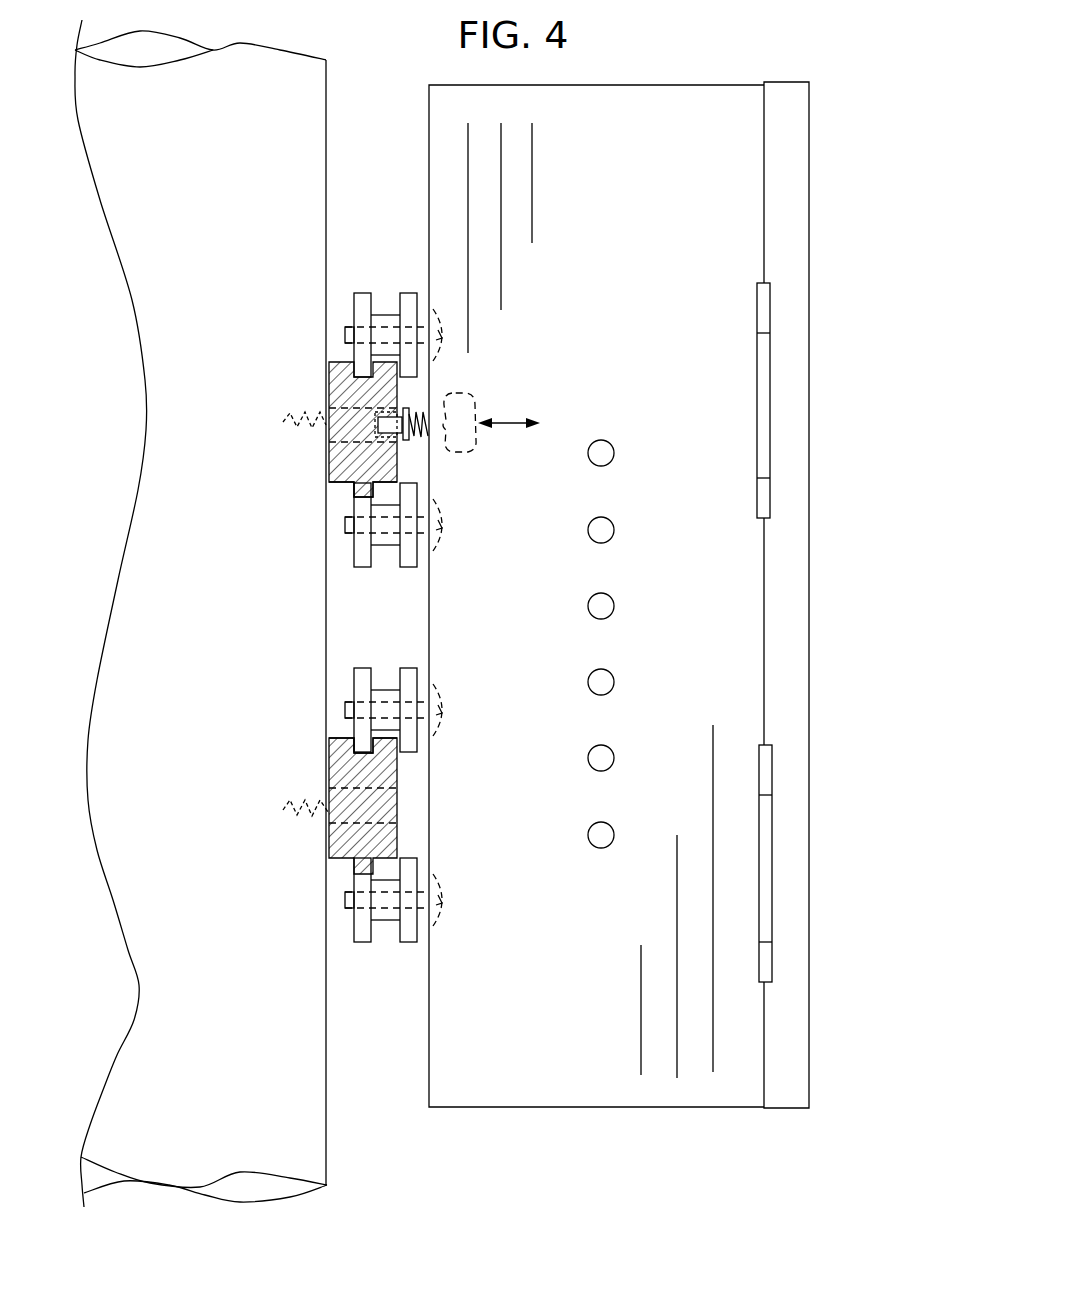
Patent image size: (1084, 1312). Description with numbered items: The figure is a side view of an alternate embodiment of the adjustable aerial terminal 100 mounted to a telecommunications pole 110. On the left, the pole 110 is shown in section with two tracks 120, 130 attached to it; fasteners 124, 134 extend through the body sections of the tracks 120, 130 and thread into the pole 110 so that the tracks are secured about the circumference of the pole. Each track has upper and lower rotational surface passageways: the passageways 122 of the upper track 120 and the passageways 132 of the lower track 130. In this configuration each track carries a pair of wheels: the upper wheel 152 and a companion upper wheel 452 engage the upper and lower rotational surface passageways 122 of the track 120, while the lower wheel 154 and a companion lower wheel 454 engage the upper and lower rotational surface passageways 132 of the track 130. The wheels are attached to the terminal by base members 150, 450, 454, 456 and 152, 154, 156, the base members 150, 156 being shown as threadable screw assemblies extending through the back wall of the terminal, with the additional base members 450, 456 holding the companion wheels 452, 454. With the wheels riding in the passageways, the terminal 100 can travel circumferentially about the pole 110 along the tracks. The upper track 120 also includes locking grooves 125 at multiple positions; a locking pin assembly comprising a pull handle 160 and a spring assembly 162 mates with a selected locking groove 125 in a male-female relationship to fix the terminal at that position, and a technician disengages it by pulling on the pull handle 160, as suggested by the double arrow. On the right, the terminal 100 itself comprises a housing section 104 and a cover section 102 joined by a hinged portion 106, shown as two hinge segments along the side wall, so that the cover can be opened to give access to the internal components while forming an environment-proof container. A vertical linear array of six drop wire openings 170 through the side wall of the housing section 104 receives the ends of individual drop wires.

The adjustable aerial terminal 100 is at (687, 607).
The cover section 102 is at (795, 1032).
The housing section 104 is at (497, 1087).
The hinged portion 106 is at (762, 373).
The telecommunications pole 110 is at (330, 1198).
The track 120 is at (340, 458).
The rotational surface passageway 122 is at (348, 487).
The fastener 124 is at (298, 415).
The locking groove 125 is at (380, 440).
The track 130 is at (340, 778).
The rotational surface passageway 132 is at (336, 767).
The fastener 134 is at (290, 815).
The base member 150 is at (447, 330).
The upper wheel 152 is at (361, 292).
The lower wheel 154 is at (365, 943).
The base member 156 is at (447, 895).
The pull handle 160 is at (470, 405).
The spring assembly 162 is at (416, 425).
The drop wire openings 170 is at (601, 453).
The base member 450 is at (447, 520).
The companion upper wheel 452 is at (410, 568).
The companion lower wheel 454 is at (412, 666).
The base member 456 is at (447, 705).